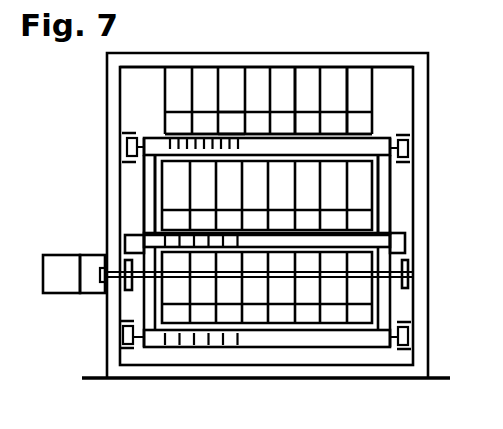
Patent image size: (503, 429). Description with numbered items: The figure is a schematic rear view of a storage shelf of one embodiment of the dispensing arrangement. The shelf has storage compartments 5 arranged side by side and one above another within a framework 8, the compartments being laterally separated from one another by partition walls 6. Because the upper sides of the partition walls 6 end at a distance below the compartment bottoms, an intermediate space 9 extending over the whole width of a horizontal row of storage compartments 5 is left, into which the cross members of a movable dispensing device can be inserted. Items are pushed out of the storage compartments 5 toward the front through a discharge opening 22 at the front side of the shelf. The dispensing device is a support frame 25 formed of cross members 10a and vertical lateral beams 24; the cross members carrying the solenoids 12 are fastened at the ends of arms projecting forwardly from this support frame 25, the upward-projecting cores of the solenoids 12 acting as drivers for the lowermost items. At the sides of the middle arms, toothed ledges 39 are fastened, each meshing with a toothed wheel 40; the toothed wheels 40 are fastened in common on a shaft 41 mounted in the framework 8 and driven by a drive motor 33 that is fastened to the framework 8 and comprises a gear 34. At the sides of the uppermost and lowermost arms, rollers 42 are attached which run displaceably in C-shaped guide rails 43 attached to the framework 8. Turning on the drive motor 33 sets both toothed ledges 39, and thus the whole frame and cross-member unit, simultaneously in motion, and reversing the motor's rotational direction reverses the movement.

The storage compartments 5 is at (340, 75).
The partition walls 6 is at (375, 82).
The framework 8 is at (275, 60).
The intermediate space 9 is at (300, 135).
The cross members 10a is at (360, 147).
The solenoids 12 is at (200, 146).
The discharge opening 22 is at (230, 122).
The vertical lateral beams 24 is at (148, 197).
The support frame 25 is at (143, 222).
The drive motor 33 is at (53, 285).
The gear 34 is at (88, 288).
The toothed ledges 39 is at (133, 243).
The toothed wheels 40 is at (128, 290).
The shaft 41 is at (412, 276).
The rollers 42 is at (126, 147).
The guide rails 43 is at (125, 133).